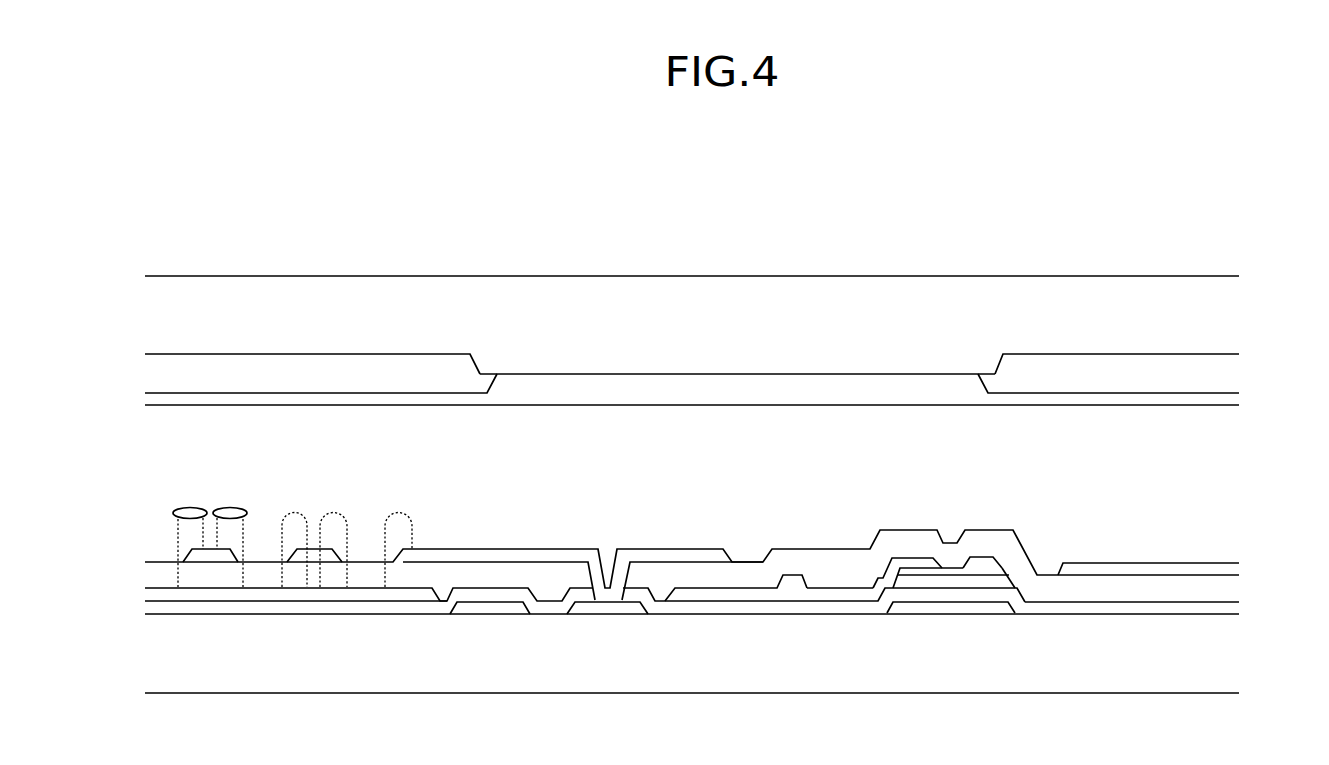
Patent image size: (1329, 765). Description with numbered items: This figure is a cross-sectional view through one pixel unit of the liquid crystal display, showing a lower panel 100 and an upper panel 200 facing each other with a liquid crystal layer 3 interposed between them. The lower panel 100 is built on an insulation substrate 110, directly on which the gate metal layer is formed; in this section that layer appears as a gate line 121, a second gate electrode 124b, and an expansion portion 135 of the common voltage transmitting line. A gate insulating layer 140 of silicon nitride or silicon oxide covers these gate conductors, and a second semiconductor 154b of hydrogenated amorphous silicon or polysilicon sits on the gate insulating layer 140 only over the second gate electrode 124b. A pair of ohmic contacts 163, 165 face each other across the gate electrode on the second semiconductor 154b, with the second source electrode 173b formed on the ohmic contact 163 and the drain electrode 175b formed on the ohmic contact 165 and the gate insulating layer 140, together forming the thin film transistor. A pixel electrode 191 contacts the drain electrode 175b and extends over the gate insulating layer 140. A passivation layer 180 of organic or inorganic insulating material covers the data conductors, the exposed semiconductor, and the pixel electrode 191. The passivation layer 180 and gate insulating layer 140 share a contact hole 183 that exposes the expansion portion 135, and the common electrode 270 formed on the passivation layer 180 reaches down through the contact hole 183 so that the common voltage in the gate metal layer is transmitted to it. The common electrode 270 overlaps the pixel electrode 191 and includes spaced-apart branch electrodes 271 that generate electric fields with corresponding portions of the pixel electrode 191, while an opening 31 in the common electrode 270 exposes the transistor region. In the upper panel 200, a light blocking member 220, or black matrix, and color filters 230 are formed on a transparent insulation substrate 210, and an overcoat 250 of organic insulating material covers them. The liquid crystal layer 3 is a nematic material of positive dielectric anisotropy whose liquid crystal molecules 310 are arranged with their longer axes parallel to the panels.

The upper panel 200 is at (1243, 276).
The insulation substrate 210 is at (1108, 308).
The light blocking member 220 is at (762, 365).
The color filter 230 is at (1183, 372).
The overcoat 250 is at (927, 390).
The liquid crystal layer 3 is at (1243, 405).
The lower panel 100 is at (1243, 575).
The insulation substrate 110 is at (1045, 668).
The gate line 121 is at (486, 606).
The expansion portion 135 is at (604, 606).
The second gate electrode 124b is at (978, 608).
The gate insulating layer 140 is at (757, 607).
The second semiconductor 154b is at (923, 583).
The ohmic contact 163 is at (975, 568).
The ohmic contact 165 is at (918, 572).
The second source electrode 173b is at (988, 565).
The drain electrode 175b is at (828, 595).
The passivation layer 180 is at (1145, 592).
The contact hole 183 is at (592, 575).
The pixel electrode 191 is at (700, 592).
The common electrode 270 is at (1168, 565).
The branch electrode 271 is at (315, 555).
The liquid crystal molecule 310 is at (184, 511).
The opening 31 is at (1053, 572).